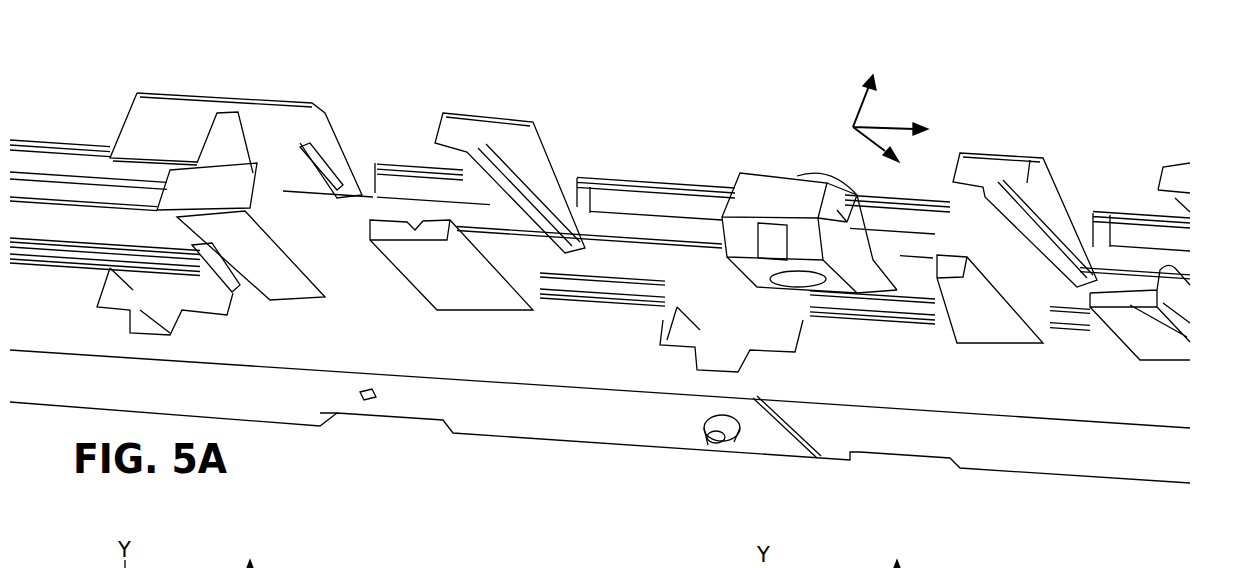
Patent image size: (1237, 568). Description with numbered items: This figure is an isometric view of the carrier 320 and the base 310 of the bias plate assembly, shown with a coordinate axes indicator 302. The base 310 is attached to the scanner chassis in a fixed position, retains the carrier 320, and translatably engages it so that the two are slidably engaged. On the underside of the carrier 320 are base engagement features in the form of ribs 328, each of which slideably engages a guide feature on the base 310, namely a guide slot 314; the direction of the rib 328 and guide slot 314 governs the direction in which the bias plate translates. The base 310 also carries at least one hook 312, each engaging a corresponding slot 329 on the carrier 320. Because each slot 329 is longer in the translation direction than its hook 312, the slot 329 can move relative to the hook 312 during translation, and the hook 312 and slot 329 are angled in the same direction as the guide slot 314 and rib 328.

The coordinate axes 302 is at (853, 123).
The base 310 is at (985, 468).
The hook 312 is at (240, 207).
The guide slot 314 is at (407, 223).
The carrier 320 is at (650, 183).
The rib 328 is at (513, 180).
The slot 329 is at (310, 153).